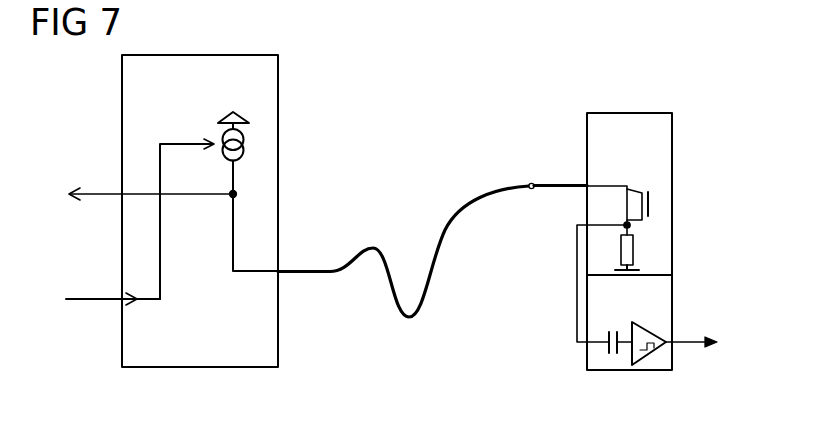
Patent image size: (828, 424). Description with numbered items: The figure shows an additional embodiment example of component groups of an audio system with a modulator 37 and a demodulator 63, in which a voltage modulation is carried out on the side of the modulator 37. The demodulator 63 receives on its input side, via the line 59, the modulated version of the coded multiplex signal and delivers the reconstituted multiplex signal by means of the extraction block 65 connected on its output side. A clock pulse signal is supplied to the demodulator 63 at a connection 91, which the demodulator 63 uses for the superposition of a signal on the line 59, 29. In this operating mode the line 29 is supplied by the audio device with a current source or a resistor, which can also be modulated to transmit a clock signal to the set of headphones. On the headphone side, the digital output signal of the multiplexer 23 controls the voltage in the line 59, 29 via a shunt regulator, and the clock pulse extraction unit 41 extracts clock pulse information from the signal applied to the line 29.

The demodulator 63 is at (279, 98).
The extraction block 65 is at (134, 195).
The connection 91 is at (122, 302).
The line 59 is at (306, 270).
The line 29 is at (543, 182).
The modulator 37 is at (672, 137).
The multiplexer 23 is at (652, 203).
The clock pulse extraction unit 41 is at (672, 297).